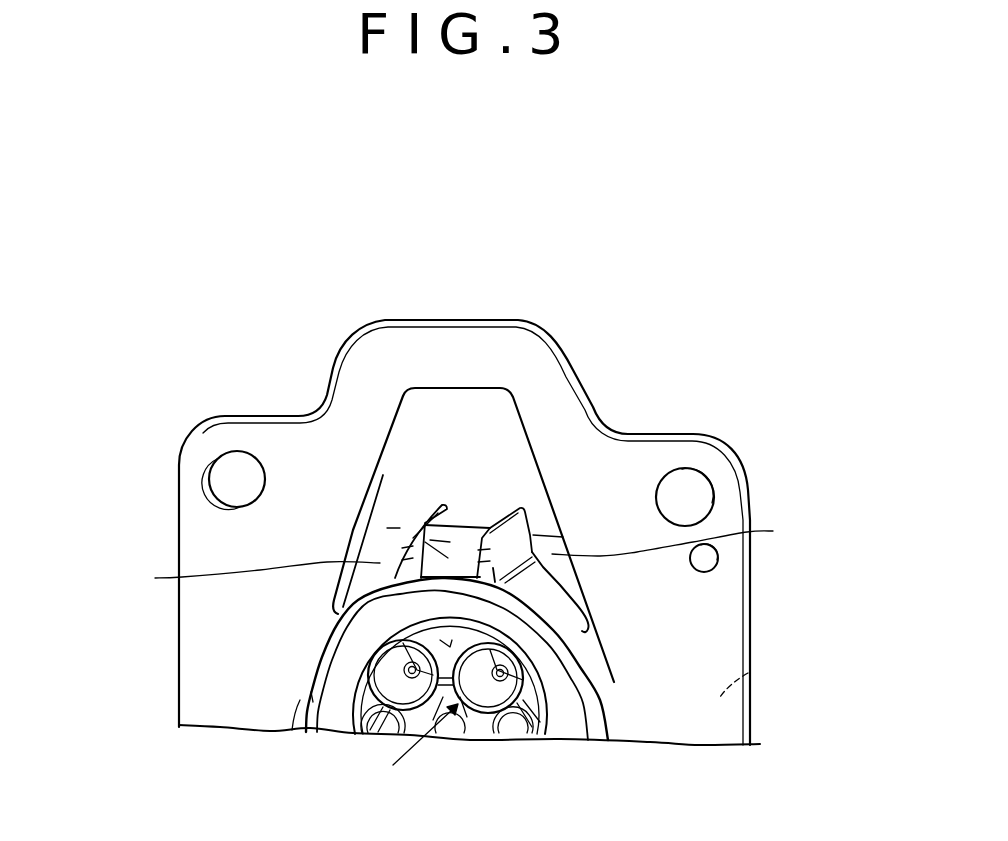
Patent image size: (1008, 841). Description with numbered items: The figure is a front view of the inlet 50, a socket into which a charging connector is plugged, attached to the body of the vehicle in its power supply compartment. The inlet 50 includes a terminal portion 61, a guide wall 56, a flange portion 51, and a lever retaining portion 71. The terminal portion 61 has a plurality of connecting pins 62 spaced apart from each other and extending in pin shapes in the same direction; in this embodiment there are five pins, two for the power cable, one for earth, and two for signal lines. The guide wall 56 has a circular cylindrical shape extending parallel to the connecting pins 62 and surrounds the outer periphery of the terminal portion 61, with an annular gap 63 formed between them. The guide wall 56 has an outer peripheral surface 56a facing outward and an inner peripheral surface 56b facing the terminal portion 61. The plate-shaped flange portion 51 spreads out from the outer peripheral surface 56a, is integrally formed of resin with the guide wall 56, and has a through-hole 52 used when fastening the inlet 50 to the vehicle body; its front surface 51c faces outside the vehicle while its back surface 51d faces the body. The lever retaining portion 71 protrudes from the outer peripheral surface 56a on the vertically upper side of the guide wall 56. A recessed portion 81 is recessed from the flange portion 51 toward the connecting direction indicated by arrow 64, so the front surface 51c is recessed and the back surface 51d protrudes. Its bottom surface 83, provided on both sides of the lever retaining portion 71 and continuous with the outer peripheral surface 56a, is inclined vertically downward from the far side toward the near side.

The inlet 50 is at (248, 376).
The flange portion 51 is at (509, 353).
The front surface 51c is at (723, 630).
The back surface 51d is at (748, 673).
The through-hole 52 is at (705, 502).
The guide wall 56 is at (307, 697).
The outer peripheral surface 56a is at (553, 610).
The inner peripheral surface 56b is at (333, 697).
The terminal portion 61 is at (548, 727).
The connecting pins 62 is at (412, 670).
The gap 63 is at (563, 703).
The arrow 64 is at (425, 755).
The lever retaining portion 71 is at (397, 527).
The recessed portion 81 is at (457, 455).
The bottom surface 83 is at (464, 557).